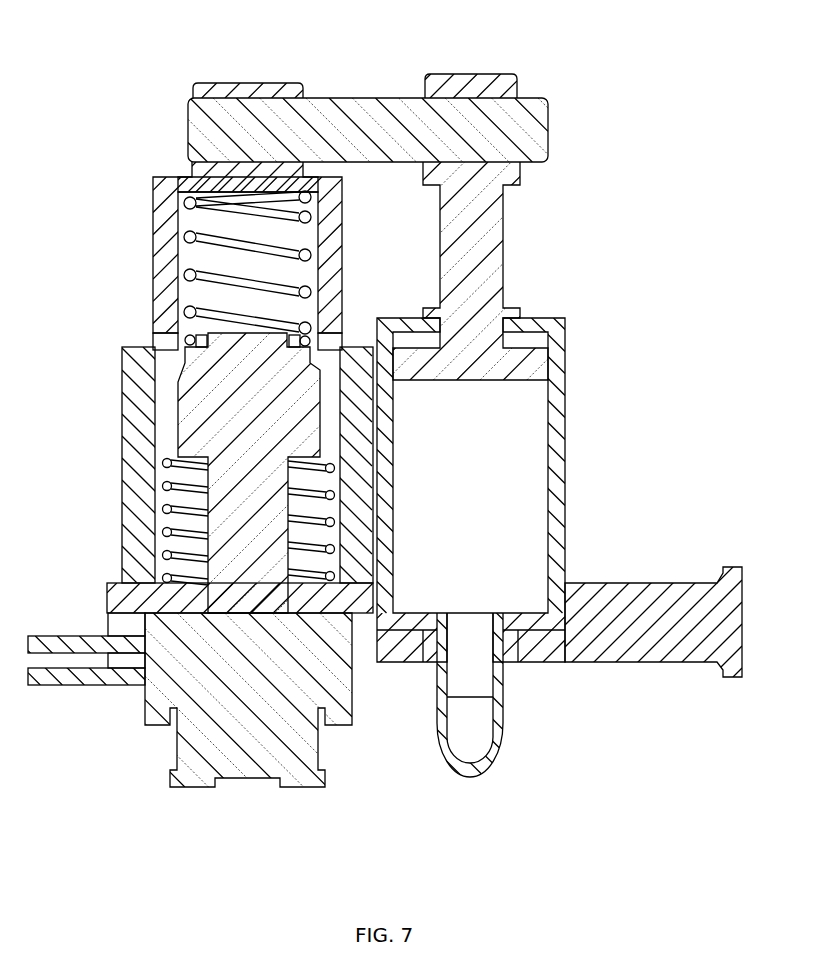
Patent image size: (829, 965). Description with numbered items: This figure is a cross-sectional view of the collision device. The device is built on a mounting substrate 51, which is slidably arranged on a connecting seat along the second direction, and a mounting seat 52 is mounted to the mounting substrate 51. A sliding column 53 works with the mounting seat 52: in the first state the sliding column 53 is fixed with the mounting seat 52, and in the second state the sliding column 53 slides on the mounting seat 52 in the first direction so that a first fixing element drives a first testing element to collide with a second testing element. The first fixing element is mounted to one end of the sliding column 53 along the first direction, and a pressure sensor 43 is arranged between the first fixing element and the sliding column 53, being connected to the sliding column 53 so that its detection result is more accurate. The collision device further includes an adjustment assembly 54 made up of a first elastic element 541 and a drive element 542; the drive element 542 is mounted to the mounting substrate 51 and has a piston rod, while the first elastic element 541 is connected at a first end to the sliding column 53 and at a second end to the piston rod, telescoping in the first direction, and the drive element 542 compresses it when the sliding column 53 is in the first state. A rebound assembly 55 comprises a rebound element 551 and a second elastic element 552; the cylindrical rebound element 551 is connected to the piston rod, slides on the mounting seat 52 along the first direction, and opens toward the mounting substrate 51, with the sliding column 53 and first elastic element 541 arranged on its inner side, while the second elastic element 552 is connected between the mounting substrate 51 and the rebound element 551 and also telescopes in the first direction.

The pressure sensor 43 is at (257, 727).
The mounting substrate 51 is at (637, 637).
The mounting seat 52 is at (135, 372).
The sliding column 53 is at (247, 413).
The adjustment assembly 54 is at (97, 62).
The first elastic element 541 is at (187, 272).
The drive element 542 is at (558, 492).
The rebound assembly 55 is at (97, 160).
The rebound element 551 is at (165, 225).
The second elastic element 552 is at (163, 507).